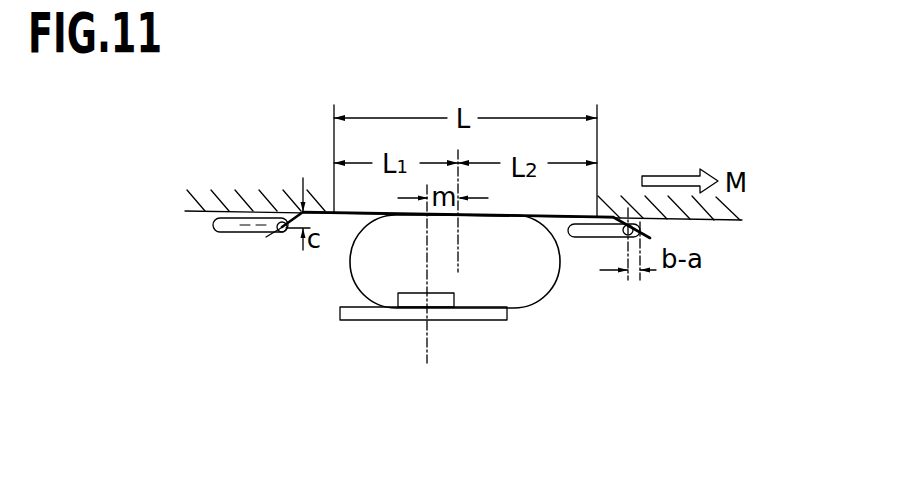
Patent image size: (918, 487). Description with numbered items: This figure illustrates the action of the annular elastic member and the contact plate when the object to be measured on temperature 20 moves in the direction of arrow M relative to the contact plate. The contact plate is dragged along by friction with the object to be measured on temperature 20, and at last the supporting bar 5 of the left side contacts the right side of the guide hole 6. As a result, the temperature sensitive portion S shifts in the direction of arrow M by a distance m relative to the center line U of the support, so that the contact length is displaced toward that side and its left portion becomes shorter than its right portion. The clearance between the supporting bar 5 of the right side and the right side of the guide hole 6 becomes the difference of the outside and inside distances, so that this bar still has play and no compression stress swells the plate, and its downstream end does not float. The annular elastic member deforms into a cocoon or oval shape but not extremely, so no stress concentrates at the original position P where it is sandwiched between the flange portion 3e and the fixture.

The object to be measured on temperature 20 is at (699, 220).
The guide hole 6 is at (231, 226).
The supporting bar 5 is at (618, 237).
The flange portion 3e is at (481, 315).
The original position P is at (391, 311).
The center line of the support U is at (427, 282).
The temperature sensitive portion S is at (457, 216).